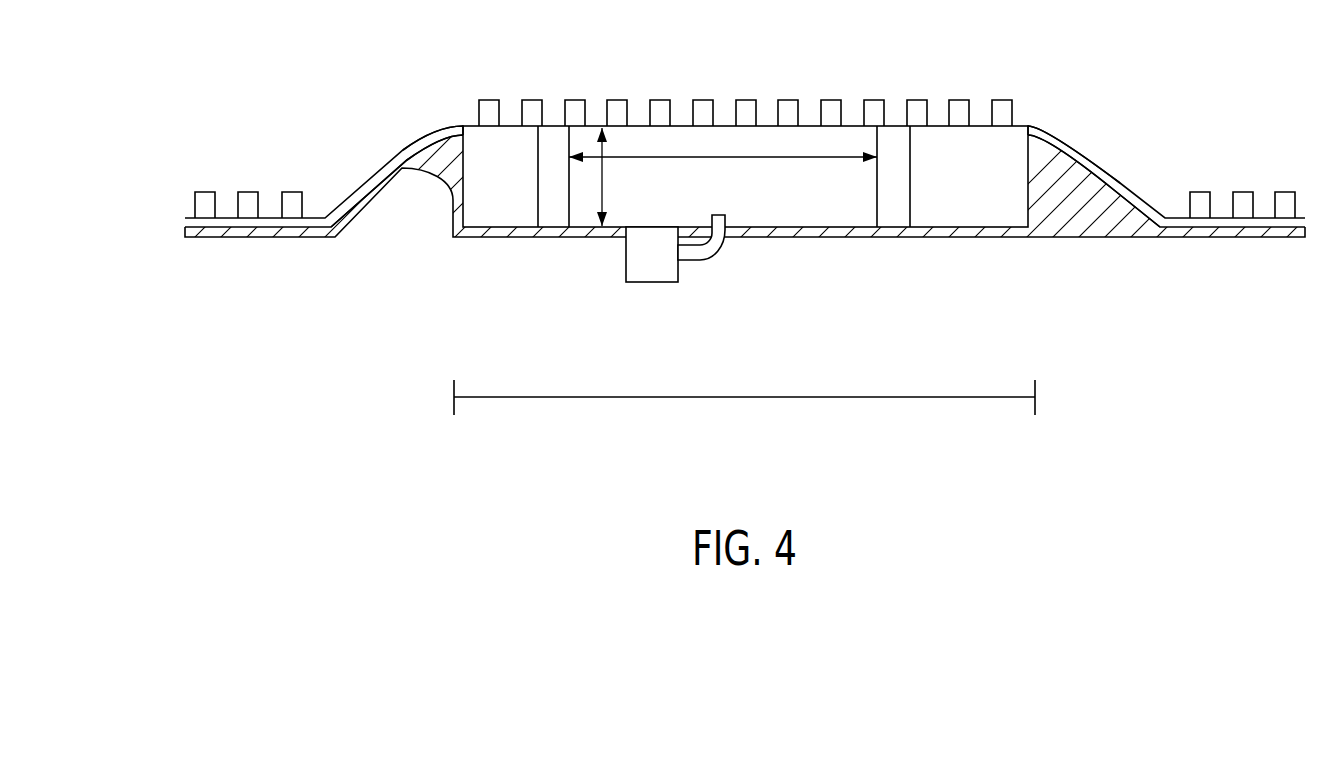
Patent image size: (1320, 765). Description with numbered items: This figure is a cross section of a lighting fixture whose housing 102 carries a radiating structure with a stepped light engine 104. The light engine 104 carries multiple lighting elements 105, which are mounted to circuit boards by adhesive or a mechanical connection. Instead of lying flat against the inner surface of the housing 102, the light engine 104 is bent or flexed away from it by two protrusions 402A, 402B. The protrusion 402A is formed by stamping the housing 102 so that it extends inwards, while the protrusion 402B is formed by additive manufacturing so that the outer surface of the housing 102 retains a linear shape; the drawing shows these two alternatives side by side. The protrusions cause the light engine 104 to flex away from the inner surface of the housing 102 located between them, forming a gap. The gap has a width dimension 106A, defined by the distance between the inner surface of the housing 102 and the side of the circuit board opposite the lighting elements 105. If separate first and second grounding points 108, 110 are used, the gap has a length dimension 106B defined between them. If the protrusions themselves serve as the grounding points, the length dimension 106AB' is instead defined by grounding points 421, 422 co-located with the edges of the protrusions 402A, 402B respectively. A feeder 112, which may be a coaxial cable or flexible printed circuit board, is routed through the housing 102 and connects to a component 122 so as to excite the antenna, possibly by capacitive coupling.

The housing 102 is at (205, 244).
The light engine 104 is at (183, 219).
The lighting elements 105 is at (205, 191).
The width dimension 106A is at (603, 182).
The length dimension 106B is at (813, 158).
The length dimension 106AB' is at (744, 425).
The first grounding point 108 is at (535, 206).
The second grounding point 110 is at (914, 204).
The feeder 112 is at (719, 211).
The component box 122 is at (666, 268).
The protrusion 402A is at (405, 205).
The protrusion 402B is at (1083, 209).
The grounding point 421 is at (463, 128).
The grounding point 422 is at (1027, 128).